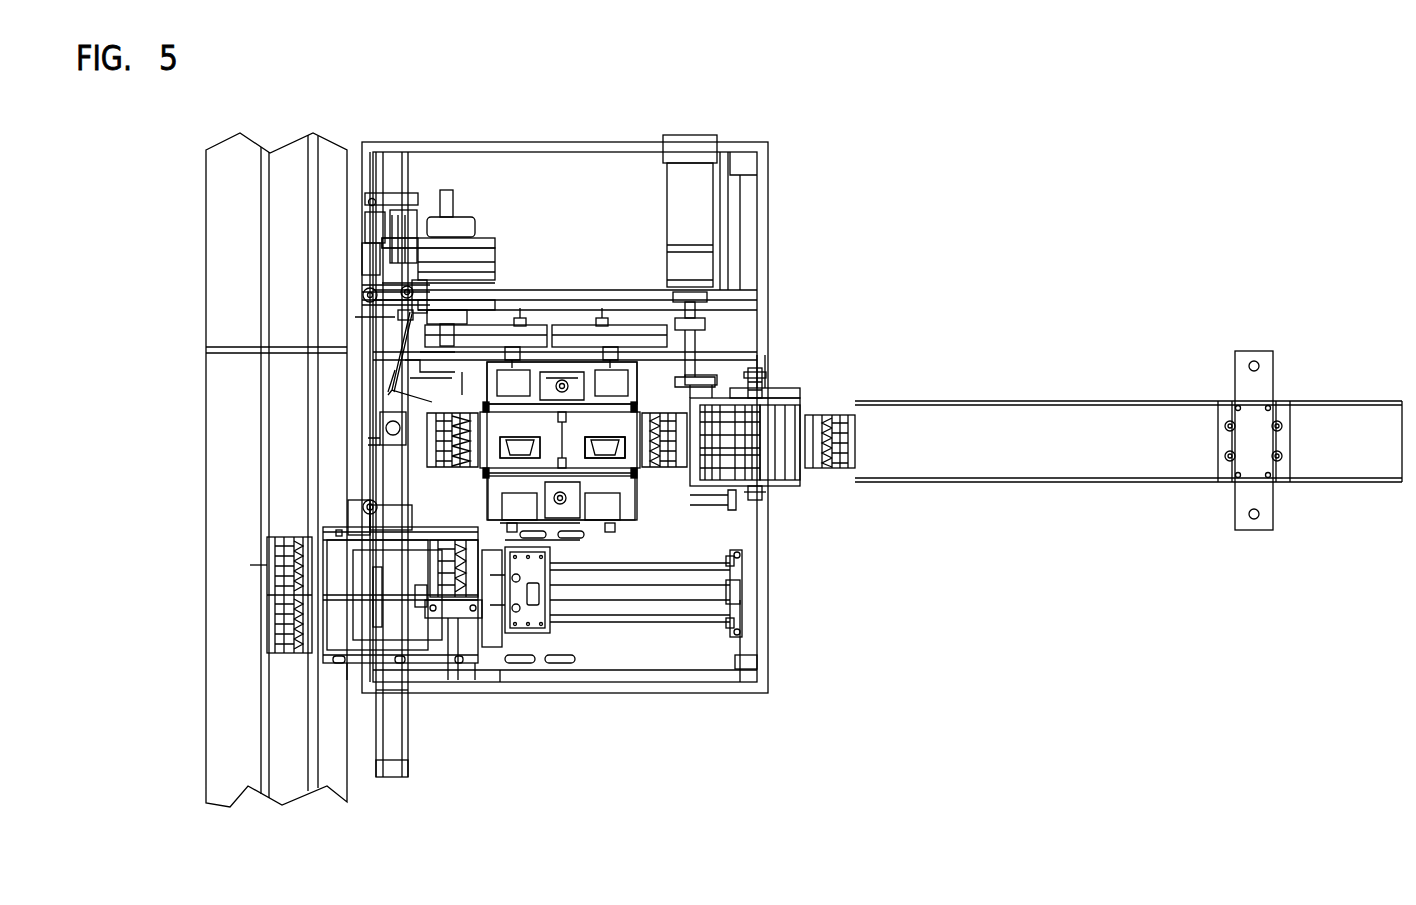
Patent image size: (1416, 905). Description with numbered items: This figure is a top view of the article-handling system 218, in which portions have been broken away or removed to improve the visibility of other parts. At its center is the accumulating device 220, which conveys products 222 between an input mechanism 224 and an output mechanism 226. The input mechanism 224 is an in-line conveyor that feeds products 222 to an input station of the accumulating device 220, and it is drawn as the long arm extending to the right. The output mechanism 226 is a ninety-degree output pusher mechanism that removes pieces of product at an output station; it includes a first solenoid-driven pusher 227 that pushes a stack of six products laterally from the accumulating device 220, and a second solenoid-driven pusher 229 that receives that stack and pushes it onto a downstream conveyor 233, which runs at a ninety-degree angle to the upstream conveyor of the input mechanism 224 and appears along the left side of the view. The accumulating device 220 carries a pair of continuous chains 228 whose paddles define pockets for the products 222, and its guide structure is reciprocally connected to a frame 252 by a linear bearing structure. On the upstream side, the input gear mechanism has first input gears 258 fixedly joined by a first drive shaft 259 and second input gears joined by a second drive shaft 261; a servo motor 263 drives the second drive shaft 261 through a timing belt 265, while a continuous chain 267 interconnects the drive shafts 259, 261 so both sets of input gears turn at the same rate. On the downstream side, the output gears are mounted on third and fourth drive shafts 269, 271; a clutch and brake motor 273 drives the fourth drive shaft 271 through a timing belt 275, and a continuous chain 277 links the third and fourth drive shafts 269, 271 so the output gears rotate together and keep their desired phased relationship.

The article-handling system 218 is at (928, 192).
The accumulating device 220 is at (577, 236).
The products 222 is at (856, 412).
The input mechanism 224 is at (1312, 400).
The output mechanism 226 is at (350, 286).
The first solenoid-driven pusher 227 is at (393, 368).
The continuous chains 228 is at (632, 410).
The second solenoid-driven pusher 229 is at (676, 600).
The downstream conveyor 233 is at (205, 758).
The frame 252 is at (767, 643).
The first input gears 258 is at (632, 395).
The first drive shaft 259 is at (594, 425).
The second drive shaft 261 is at (606, 325).
The servo motor 263 is at (688, 135).
The timing belt 265 is at (652, 340).
The continuous chain 267 is at (588, 453).
The third drive shaft 269 is at (526, 425).
The fourth drive shaft 271 is at (520, 323).
The clutch and brake motor 273 is at (462, 221).
The timing belt 275 is at (487, 338).
The continuous chain 277 is at (536, 453).